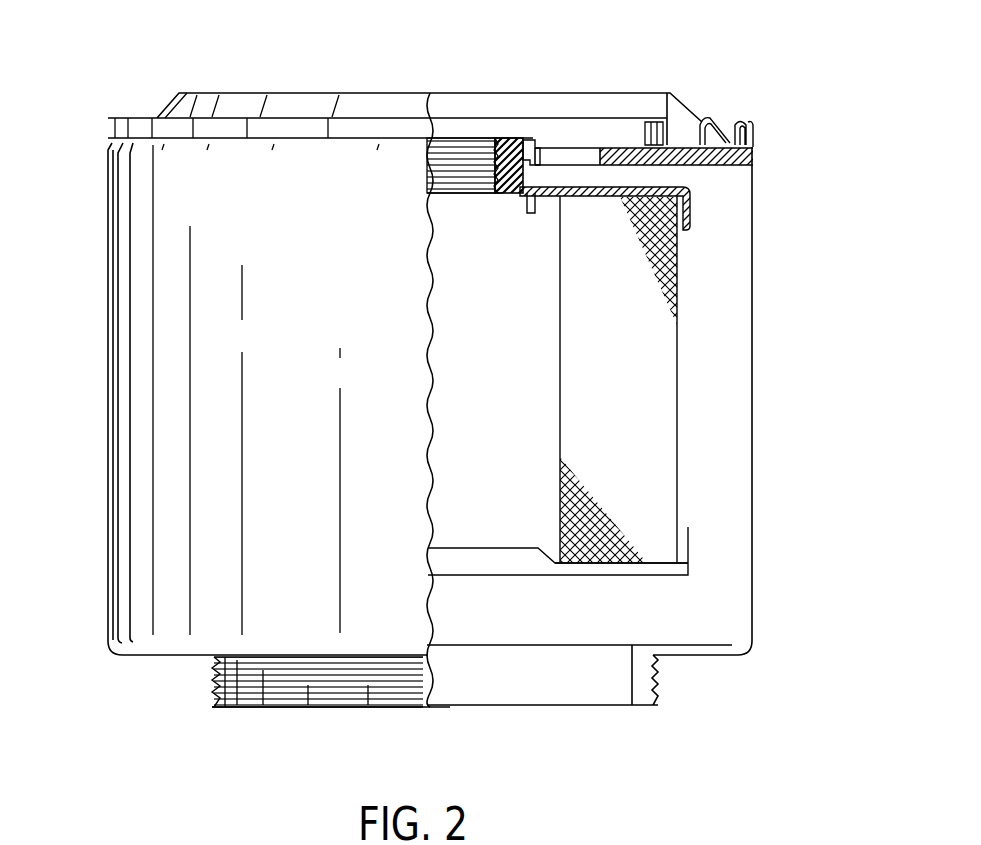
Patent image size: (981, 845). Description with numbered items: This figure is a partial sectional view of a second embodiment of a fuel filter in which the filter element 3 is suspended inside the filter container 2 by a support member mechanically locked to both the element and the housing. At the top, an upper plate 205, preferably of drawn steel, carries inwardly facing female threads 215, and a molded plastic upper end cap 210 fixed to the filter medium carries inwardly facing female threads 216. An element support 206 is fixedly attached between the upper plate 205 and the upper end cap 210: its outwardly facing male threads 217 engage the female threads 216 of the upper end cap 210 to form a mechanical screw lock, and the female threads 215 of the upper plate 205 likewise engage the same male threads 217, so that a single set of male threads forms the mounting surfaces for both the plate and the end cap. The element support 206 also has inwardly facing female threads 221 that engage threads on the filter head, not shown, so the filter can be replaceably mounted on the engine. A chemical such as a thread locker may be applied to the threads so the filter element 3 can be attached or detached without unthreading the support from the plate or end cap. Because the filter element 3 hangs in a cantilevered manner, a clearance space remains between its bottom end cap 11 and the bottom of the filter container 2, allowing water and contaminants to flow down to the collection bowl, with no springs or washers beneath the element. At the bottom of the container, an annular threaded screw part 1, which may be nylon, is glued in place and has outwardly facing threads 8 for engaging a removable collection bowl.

The threaded screw part 1 is at (377, 708).
The filter container 2 is at (108, 385).
The filter element 3 is at (668, 400).
The outwardly facing threads 8 is at (213, 693).
The bottom end cap 11 is at (647, 575).
The upper plate 205 is at (631, 130).
The element support 206 is at (515, 130).
The upper end cap 210 is at (692, 215).
The female threads 215 is at (530, 137).
The female threads 216 is at (523, 194).
The male threads 217 is at (520, 180).
The female threads 221 is at (472, 143).